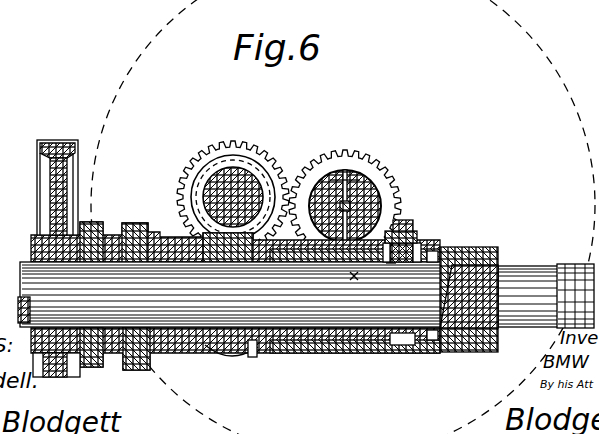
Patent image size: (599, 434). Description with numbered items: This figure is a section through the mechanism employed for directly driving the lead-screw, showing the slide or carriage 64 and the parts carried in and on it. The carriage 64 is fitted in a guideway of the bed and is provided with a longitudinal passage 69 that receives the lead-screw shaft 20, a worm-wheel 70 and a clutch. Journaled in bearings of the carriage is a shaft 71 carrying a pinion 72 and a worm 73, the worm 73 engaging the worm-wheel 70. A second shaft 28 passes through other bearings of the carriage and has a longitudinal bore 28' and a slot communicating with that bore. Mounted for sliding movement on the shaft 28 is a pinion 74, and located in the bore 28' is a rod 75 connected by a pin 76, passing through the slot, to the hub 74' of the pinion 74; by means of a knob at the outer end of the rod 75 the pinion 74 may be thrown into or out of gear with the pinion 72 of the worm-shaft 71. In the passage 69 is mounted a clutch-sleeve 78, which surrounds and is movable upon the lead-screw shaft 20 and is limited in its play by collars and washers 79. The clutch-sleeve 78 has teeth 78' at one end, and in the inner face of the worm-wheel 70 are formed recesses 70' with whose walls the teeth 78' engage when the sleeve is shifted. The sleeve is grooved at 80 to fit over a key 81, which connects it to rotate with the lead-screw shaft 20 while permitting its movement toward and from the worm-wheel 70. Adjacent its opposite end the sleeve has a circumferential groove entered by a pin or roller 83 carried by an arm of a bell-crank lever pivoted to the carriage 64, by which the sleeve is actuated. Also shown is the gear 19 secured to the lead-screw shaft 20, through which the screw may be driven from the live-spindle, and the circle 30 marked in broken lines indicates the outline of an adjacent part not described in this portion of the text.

The gear 19 is at (51, 184).
The lead-screw shaft 20 is at (306, 295).
The shaft 28 is at (394, 197).
The longitudinal bore 28' is at (378, 174).
The wheel circle 30 is at (548, 49).
The slide or carriage 64 is at (348, 345).
The longitudinal passage 69 is at (293, 352).
The worm-wheel 70 is at (231, 366).
The recesses 70' is at (168, 373).
The shaft 71 is at (248, 185).
The pinion 72 is at (210, 146).
The worm 73 is at (246, 167).
The pinion 74 is at (373, 206).
The hub 74' is at (374, 145).
The rod 75 is at (383, 214).
The pin 76 is at (397, 197).
The clutch-sleeve 78 is at (409, 361).
The teeth 78' is at (265, 379).
The collars and washers 79 is at (478, 251).
The groove 80 is at (391, 263).
The key 81 is at (361, 263).
The pin or roller 83 is at (414, 225).